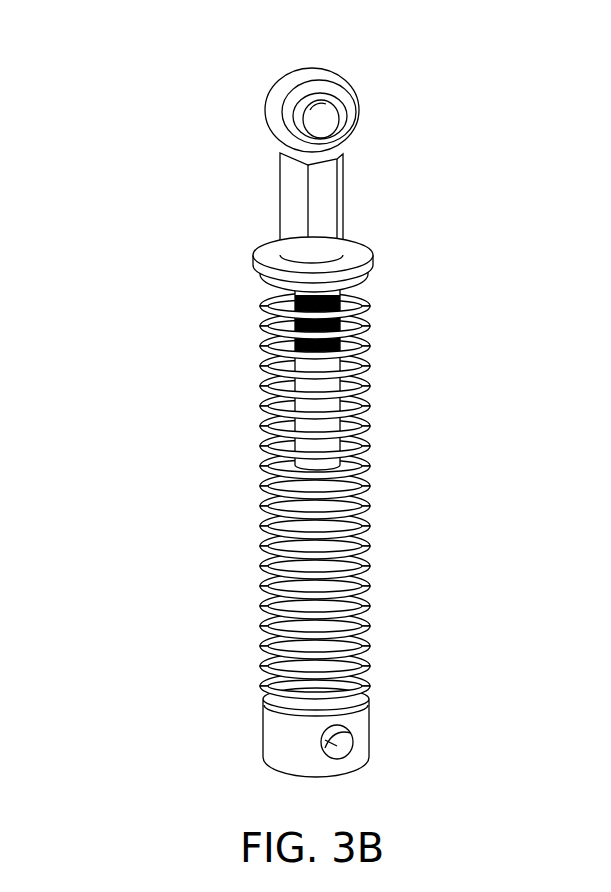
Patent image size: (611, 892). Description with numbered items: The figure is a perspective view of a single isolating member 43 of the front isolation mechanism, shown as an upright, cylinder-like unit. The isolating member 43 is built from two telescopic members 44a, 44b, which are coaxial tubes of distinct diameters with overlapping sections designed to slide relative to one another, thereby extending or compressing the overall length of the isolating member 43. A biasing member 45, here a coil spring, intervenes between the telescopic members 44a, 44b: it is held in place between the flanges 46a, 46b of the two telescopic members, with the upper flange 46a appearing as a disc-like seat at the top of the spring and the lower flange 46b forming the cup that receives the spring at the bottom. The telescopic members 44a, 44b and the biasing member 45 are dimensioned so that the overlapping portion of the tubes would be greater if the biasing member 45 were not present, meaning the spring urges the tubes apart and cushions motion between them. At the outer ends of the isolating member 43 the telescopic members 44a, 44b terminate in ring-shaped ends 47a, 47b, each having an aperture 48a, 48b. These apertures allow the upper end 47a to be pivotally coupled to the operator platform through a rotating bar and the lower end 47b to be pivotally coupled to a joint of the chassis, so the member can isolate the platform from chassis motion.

The isolating member 43 is at (168, 195).
The telescopic member 44a is at (328, 427).
The telescopic member 44b is at (332, 586).
The biasing member 45 is at (270, 404).
The flange 46a is at (258, 280).
The flange 46b is at (275, 719).
The upper end 47a is at (355, 78).
The lower end 47b is at (388, 755).
The aperture 48a is at (327, 122).
The aperture 48b is at (350, 740).